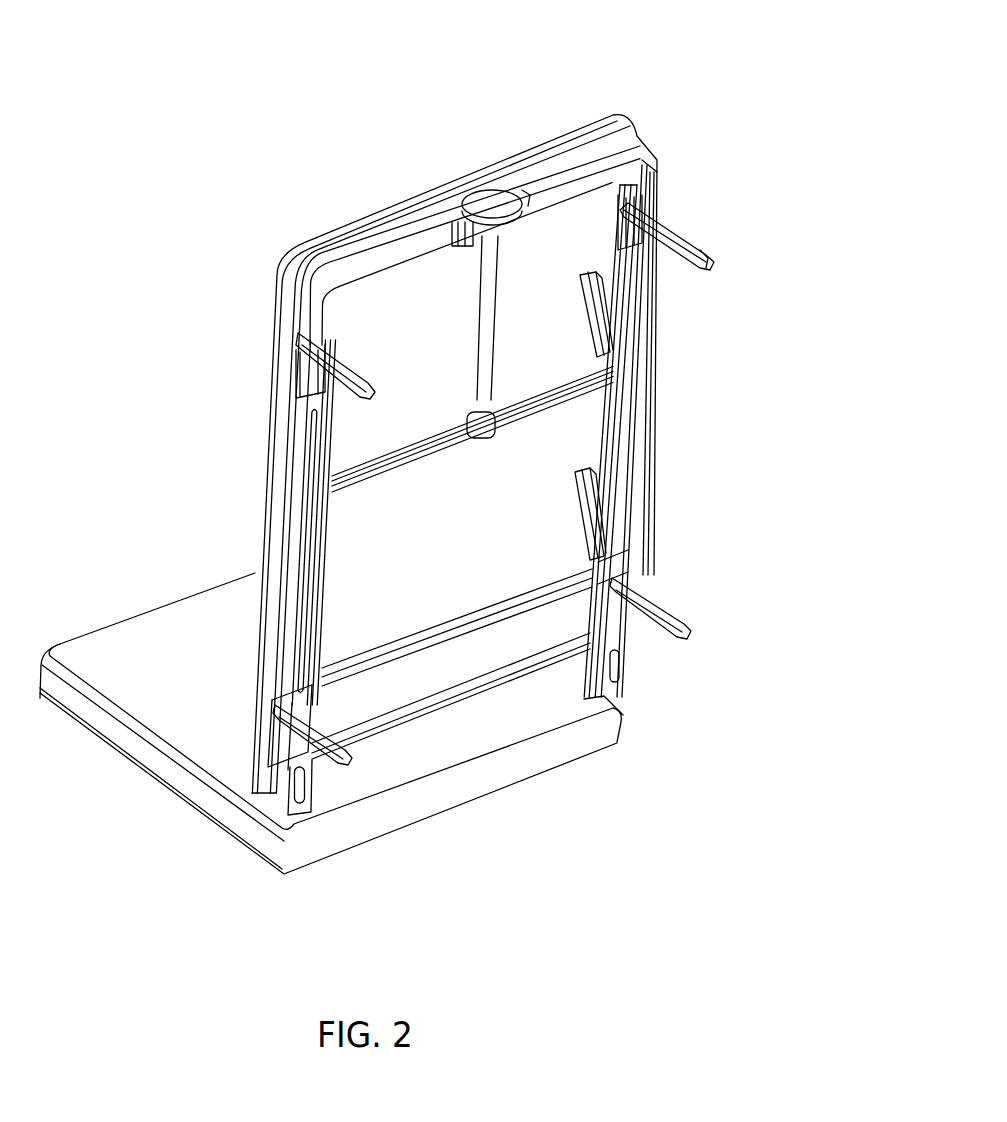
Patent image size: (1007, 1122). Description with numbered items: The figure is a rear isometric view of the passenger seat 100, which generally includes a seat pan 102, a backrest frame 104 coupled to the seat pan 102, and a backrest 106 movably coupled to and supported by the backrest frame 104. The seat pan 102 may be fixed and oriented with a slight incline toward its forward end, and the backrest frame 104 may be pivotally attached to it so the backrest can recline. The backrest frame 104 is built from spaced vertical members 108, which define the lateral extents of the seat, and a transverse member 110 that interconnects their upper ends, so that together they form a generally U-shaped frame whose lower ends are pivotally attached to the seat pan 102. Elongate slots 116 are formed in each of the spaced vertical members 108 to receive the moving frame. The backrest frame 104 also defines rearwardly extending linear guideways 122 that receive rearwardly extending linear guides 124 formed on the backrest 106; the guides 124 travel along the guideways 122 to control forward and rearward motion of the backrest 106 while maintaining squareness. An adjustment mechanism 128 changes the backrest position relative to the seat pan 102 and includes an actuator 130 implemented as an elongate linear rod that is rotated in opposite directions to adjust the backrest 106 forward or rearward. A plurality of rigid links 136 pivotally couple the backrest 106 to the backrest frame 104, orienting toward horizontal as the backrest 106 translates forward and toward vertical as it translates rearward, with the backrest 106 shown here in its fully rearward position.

The passenger seat 100 is at (576, 106).
The seat pan 102 is at (113, 643).
The backrest frame 104 is at (652, 380).
The backrest 106 is at (267, 487).
The spaced vertical members 108 is at (625, 448).
The transverse member 110 is at (421, 240).
The elongate slots 116 is at (407, 473).
The linear guideways 122 is at (684, 226).
The linear guides 124 is at (712, 254).
The adjustment mechanism 128 is at (484, 177).
The actuator 130 is at (488, 295).
The links 136 is at (602, 309).